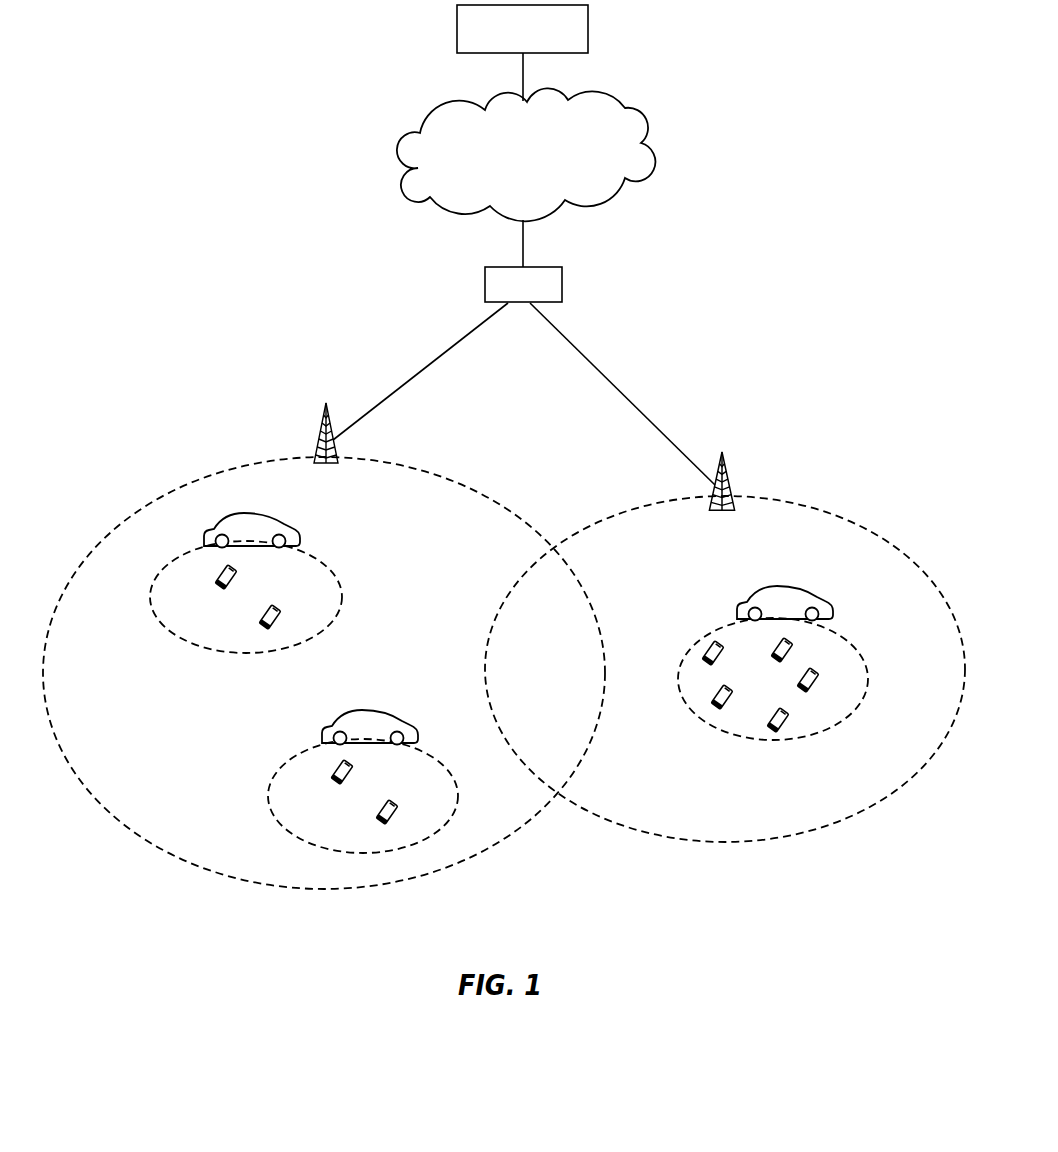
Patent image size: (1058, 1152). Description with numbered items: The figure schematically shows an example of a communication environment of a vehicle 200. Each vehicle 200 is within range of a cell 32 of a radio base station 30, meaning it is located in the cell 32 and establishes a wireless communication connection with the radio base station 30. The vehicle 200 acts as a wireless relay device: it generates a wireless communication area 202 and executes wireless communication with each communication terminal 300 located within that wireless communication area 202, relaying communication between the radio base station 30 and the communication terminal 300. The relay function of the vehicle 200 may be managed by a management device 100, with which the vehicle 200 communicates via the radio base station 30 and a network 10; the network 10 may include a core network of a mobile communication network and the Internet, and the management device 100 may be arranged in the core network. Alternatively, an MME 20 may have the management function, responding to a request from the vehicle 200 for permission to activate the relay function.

The management device 100 is at (590, 22).
The network 10 is at (647, 121).
The MME (Mobility Management Entity) 20 is at (563, 291).
The radio base station 30 is at (333, 396).
The cell 32 is at (409, 464).
The vehicle 200 is at (254, 505).
The wireless communication area 202 is at (336, 554).
The communication terminal 300 is at (240, 574).